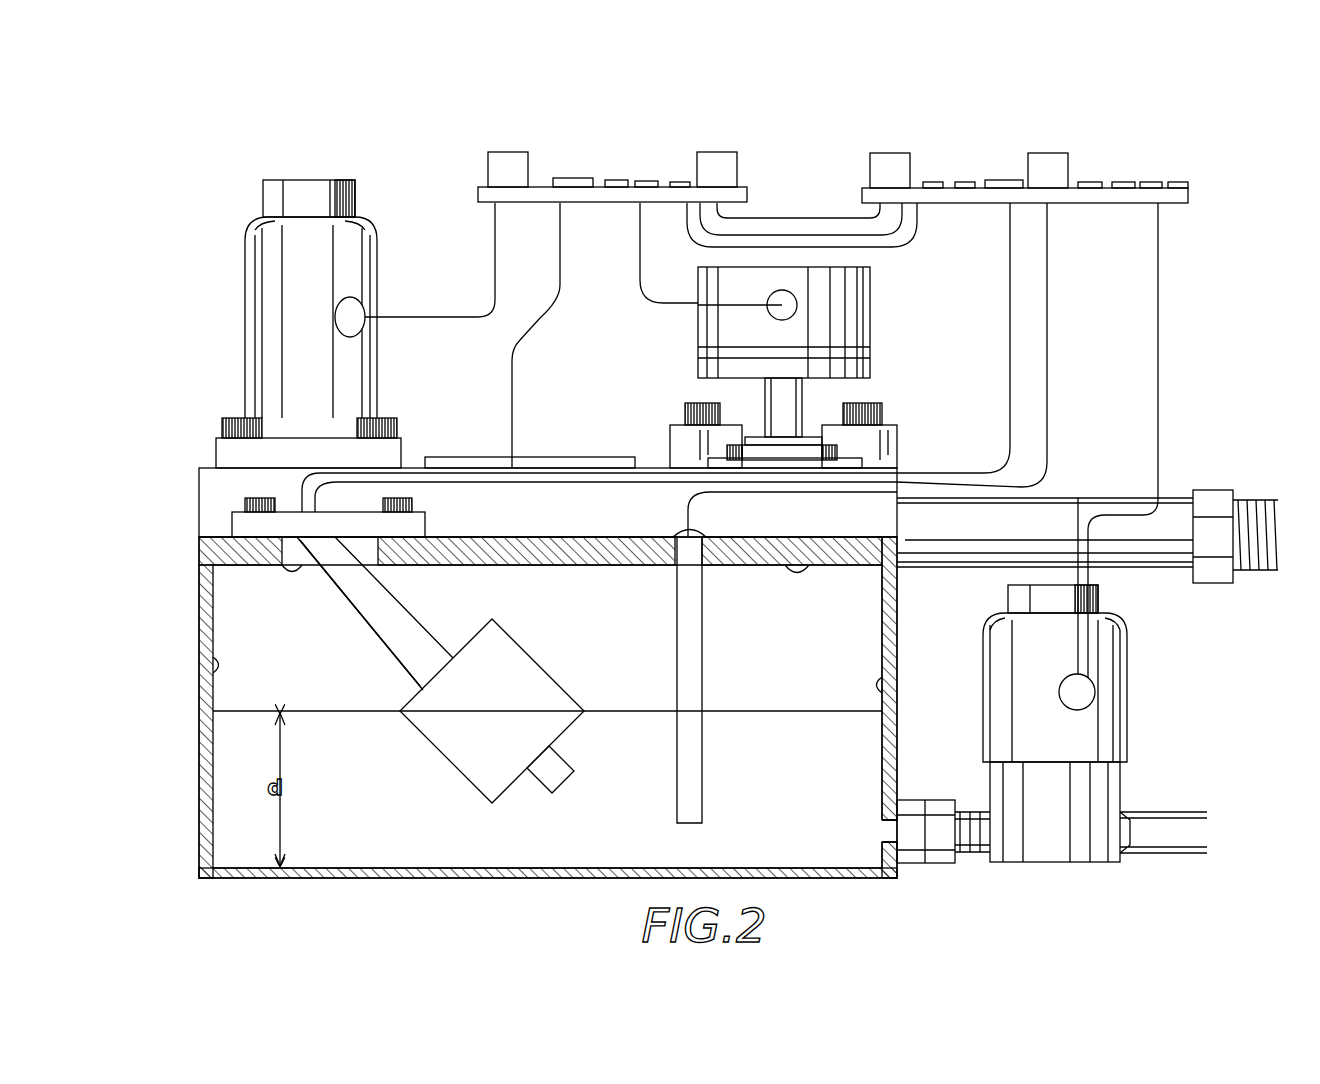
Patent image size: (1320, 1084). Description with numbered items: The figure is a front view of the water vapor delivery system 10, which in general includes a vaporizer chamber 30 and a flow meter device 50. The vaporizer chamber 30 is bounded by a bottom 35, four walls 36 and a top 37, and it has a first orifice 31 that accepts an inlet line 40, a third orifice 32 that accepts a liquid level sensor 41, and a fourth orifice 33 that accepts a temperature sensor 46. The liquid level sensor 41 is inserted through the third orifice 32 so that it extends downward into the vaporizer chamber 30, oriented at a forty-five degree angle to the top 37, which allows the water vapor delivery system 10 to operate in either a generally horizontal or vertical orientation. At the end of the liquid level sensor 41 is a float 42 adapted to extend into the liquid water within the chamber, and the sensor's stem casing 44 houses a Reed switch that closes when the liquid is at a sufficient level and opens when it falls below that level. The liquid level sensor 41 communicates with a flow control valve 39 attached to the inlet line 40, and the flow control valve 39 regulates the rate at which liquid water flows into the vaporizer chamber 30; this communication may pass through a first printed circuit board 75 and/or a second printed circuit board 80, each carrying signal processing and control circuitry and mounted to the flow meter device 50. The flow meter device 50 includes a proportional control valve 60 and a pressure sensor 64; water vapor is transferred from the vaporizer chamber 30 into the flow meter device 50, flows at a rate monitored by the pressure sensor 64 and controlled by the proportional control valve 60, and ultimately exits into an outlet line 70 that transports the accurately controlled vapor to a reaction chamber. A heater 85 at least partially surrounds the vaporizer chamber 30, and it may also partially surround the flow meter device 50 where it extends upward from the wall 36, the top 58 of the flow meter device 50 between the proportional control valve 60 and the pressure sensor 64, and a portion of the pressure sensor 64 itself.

The water vapor delivery system 10 is at (243, 148).
The vaporizer chamber 30 is at (899, 650).
The first orifice 31 is at (880, 826).
The third orifice 32 is at (290, 568).
The fourth orifice 33 is at (680, 575).
The bottom 35 is at (560, 868).
The walls 36 is at (213, 665).
The top 37 is at (813, 560).
The flow control valve 39 is at (1130, 672).
The inlet line 40 is at (982, 858).
The liquid level sensor 41 is at (385, 628).
The float 42 is at (423, 687).
The stem casing 44 is at (418, 620).
The temperature sensor 46 is at (703, 647).
The flow meter device 50 is at (655, 468).
The top of the flow meter device 58 is at (417, 467).
The proportional control valve 60 is at (245, 282).
The pressure sensor 64 is at (870, 297).
The outlet line 70 is at (1175, 492).
The first printed circuit board 75 is at (540, 185).
The second printed circuit board 80 is at (980, 185).
The heater 85 is at (488, 457).